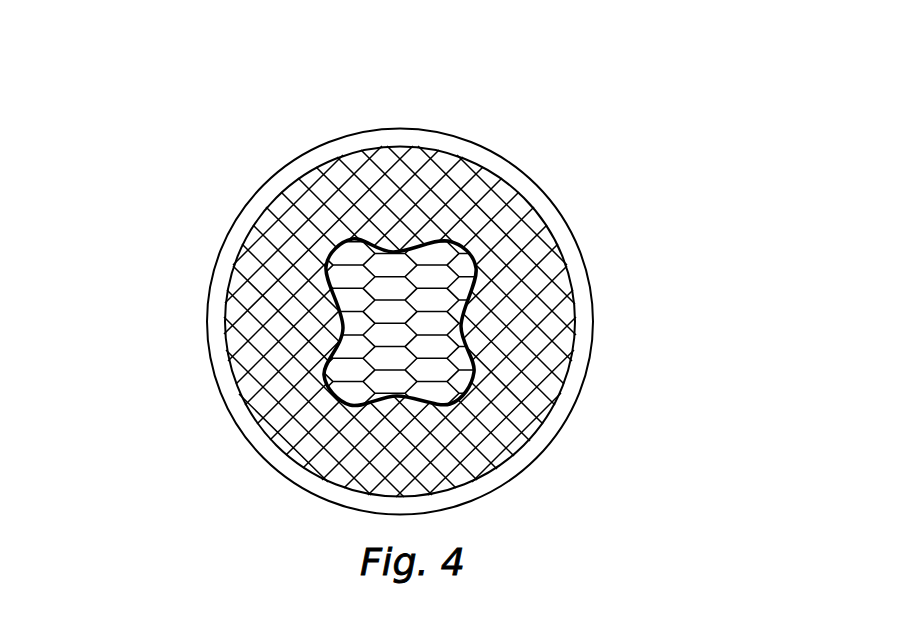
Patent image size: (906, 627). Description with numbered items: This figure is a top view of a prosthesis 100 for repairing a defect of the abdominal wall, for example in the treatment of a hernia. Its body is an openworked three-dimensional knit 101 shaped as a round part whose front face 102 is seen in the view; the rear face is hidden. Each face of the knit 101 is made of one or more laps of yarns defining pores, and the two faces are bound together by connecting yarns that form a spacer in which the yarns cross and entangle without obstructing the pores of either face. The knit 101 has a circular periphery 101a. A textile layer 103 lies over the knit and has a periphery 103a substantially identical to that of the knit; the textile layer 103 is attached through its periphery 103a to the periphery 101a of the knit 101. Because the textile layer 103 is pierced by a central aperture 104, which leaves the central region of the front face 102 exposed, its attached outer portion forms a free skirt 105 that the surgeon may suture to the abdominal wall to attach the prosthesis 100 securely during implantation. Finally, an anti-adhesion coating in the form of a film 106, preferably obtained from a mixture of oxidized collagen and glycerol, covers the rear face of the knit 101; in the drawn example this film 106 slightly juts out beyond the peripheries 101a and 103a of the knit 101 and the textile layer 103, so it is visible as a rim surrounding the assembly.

The prosthesis 100 is at (192, 265).
The openworked three-dimensional knit 101 is at (448, 356).
The circular periphery of the knit 101a is at (543, 187).
The front face 102 is at (422, 292).
The textile layer 103 is at (538, 277).
The periphery of the textile layer 103a is at (543, 187).
The central aperture 104 is at (388, 323).
The free skirt 105 is at (338, 203).
The film 106 is at (563, 425).